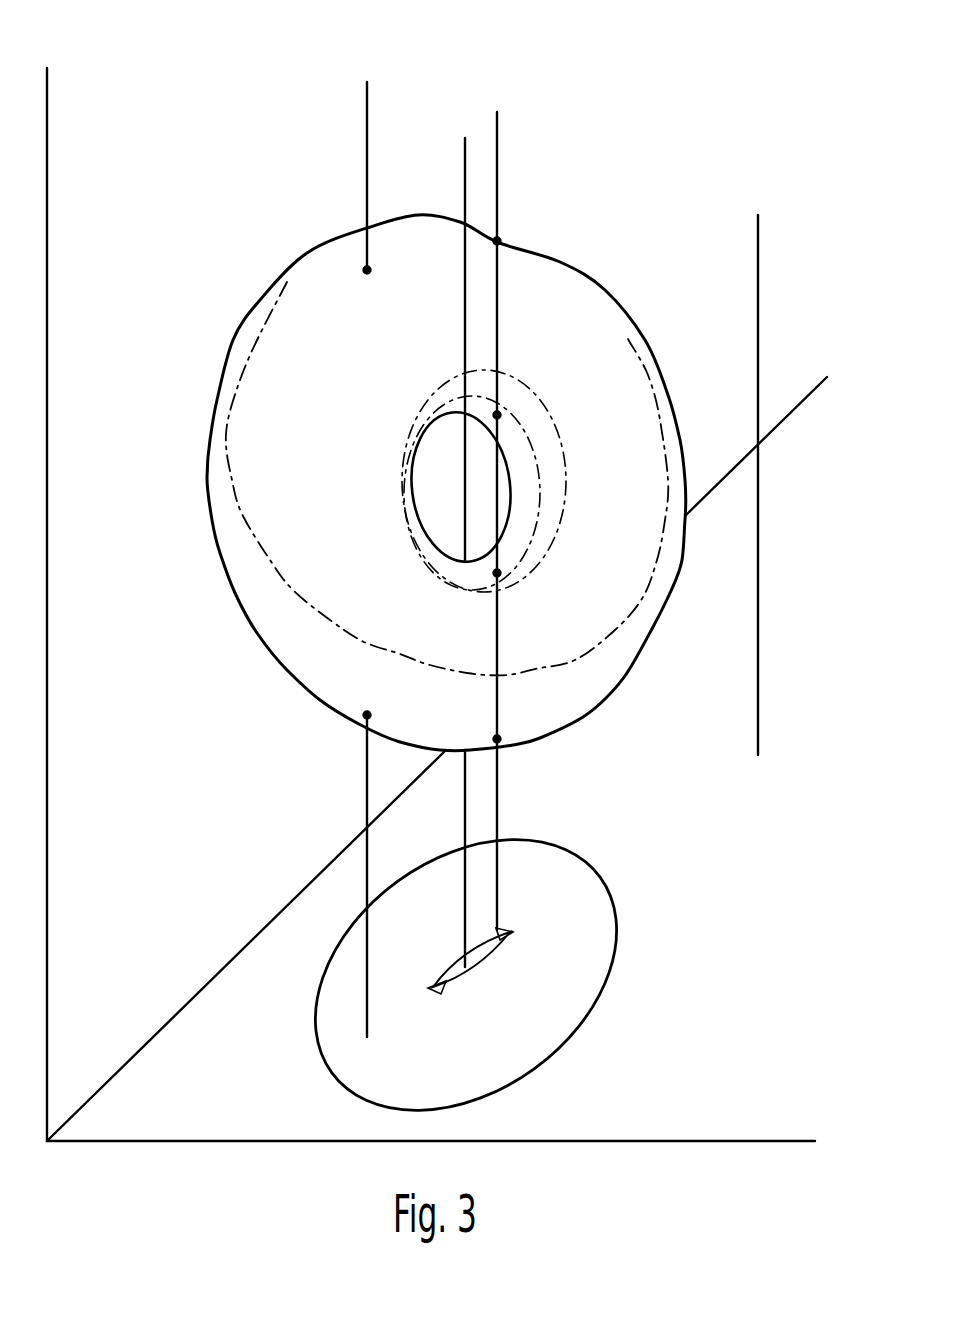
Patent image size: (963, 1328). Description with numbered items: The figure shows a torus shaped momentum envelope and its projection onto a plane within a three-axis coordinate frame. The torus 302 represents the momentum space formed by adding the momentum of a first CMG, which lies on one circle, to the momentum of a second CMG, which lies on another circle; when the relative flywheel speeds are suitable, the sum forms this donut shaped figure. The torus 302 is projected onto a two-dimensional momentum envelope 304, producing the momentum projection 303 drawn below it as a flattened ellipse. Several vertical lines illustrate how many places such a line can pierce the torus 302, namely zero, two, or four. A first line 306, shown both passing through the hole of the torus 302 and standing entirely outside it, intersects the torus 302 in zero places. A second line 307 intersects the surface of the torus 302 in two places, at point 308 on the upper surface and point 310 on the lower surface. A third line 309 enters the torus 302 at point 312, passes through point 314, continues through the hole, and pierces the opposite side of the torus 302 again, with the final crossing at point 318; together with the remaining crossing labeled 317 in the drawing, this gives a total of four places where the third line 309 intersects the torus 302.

The torus 302 is at (208, 482).
The momentum projection 303 is at (335, 978).
The two-dimensional momentum envelope 304 is at (760, 972).
The first line 306 is at (465, 165).
The second line 307 is at (367, 108).
The point 308 is at (367, 270).
The third line 309 is at (497, 135).
The point 310 is at (367, 715).
The point 312 is at (497, 241).
The point 314 is at (497, 415).
The lower hole measurement point 317 is at (497, 573).
The point 318 is at (497, 739).